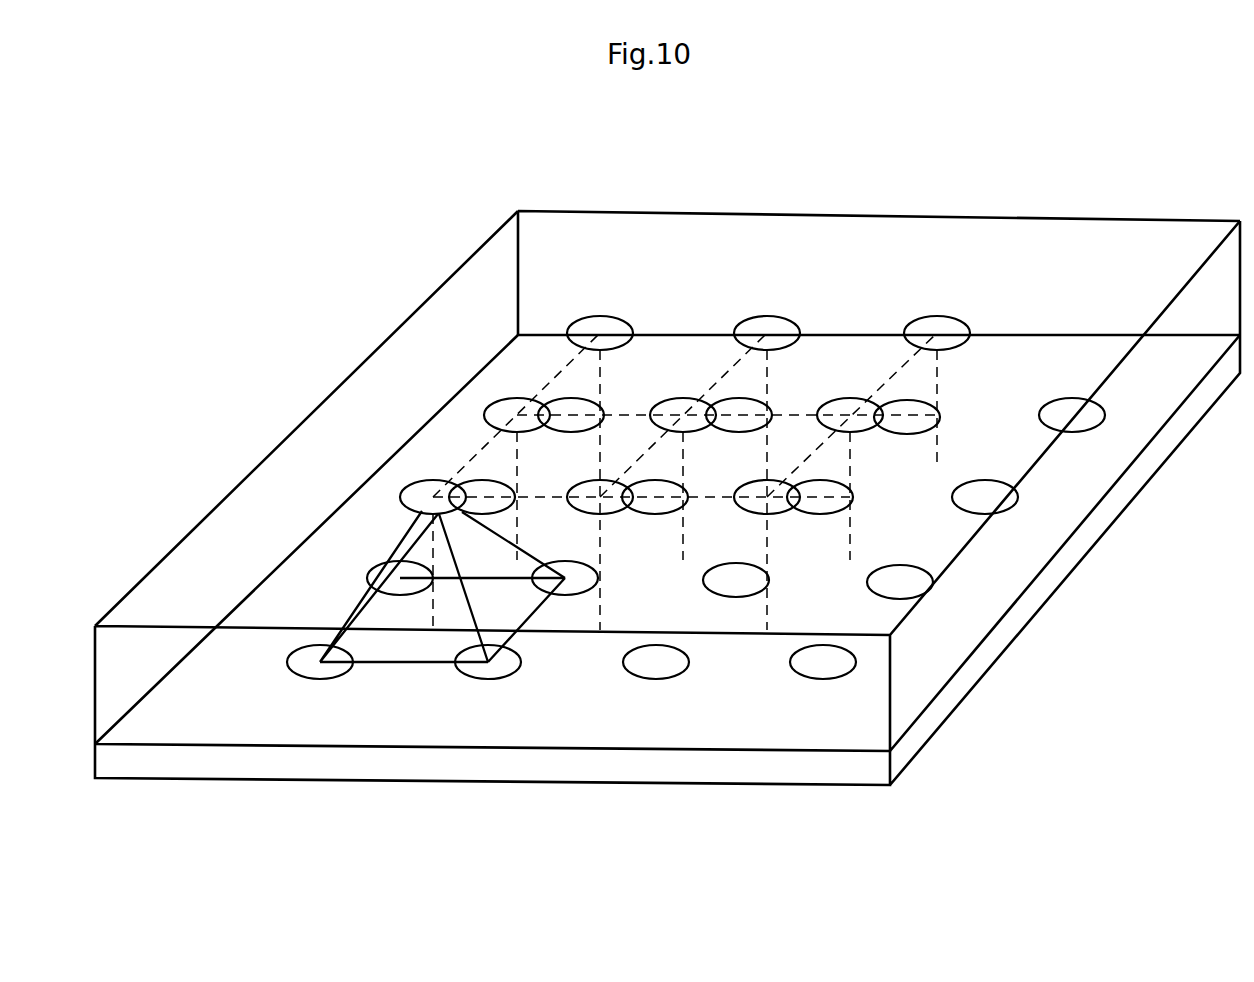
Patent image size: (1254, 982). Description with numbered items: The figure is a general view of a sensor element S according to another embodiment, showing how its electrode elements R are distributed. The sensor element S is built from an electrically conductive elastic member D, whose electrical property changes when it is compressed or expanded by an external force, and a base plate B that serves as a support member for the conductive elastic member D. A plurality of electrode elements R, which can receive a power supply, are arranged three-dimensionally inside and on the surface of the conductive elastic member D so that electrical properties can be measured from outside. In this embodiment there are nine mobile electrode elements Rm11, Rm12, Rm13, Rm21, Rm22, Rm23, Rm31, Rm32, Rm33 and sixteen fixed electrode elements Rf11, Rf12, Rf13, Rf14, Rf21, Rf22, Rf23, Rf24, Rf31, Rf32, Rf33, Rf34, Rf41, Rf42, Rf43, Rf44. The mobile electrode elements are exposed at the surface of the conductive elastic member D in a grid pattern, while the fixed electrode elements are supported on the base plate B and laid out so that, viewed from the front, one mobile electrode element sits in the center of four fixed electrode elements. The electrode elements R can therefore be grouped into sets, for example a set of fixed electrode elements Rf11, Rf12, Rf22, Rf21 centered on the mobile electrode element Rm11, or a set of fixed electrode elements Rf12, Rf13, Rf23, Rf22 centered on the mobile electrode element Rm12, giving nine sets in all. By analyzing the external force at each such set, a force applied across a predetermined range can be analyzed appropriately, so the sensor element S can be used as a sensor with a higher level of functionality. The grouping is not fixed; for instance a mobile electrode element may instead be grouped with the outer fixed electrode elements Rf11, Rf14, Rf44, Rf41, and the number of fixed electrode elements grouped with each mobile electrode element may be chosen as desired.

The sensor element S is at (643, 183).
The conductive elastic member D is at (310, 384).
The electrode elements R is at (262, 505).
The base plate B is at (478, 787).
The mobile electrode element Rm11 is at (435, 480).
The mobile electrode element Rm12 is at (592, 481).
The mobile electrode element Rm13 is at (760, 481).
The mobile electrode element Rm21 is at (517, 398).
The mobile electrode element Rm22 is at (683, 398).
The mobile electrode element Rm23 is at (850, 398).
The mobile electrode element Rm31 is at (600, 316).
The mobile electrode element Rm32 is at (767, 316).
The mobile electrode element Rm33 is at (937, 316).
The fixed electrode element Rf11 is at (330, 680).
The fixed electrode element Rf12 is at (490, 680).
The fixed electrode element Rf13 is at (656, 680).
The fixed electrode element Rf14 is at (826, 680).
The fixed electrode element Rf21 is at (374, 569).
The fixed electrode element Rf22 is at (594, 570).
The fixed electrode element Rf23 is at (765, 571).
The fixed electrode element Rf24 is at (934, 572).
The fixed electrode element Rf31 is at (500, 485).
The fixed electrode element Rf32 is at (670, 485).
The fixed electrode element Rf33 is at (838, 483).
The fixed electrode element Rf34 is at (1016, 488).
The fixed electrode element Rf41 is at (575, 398).
The fixed electrode element Rf42 is at (742, 398).
The fixed electrode element Rf43 is at (910, 400).
The fixed electrode element Rf44 is at (1097, 401).